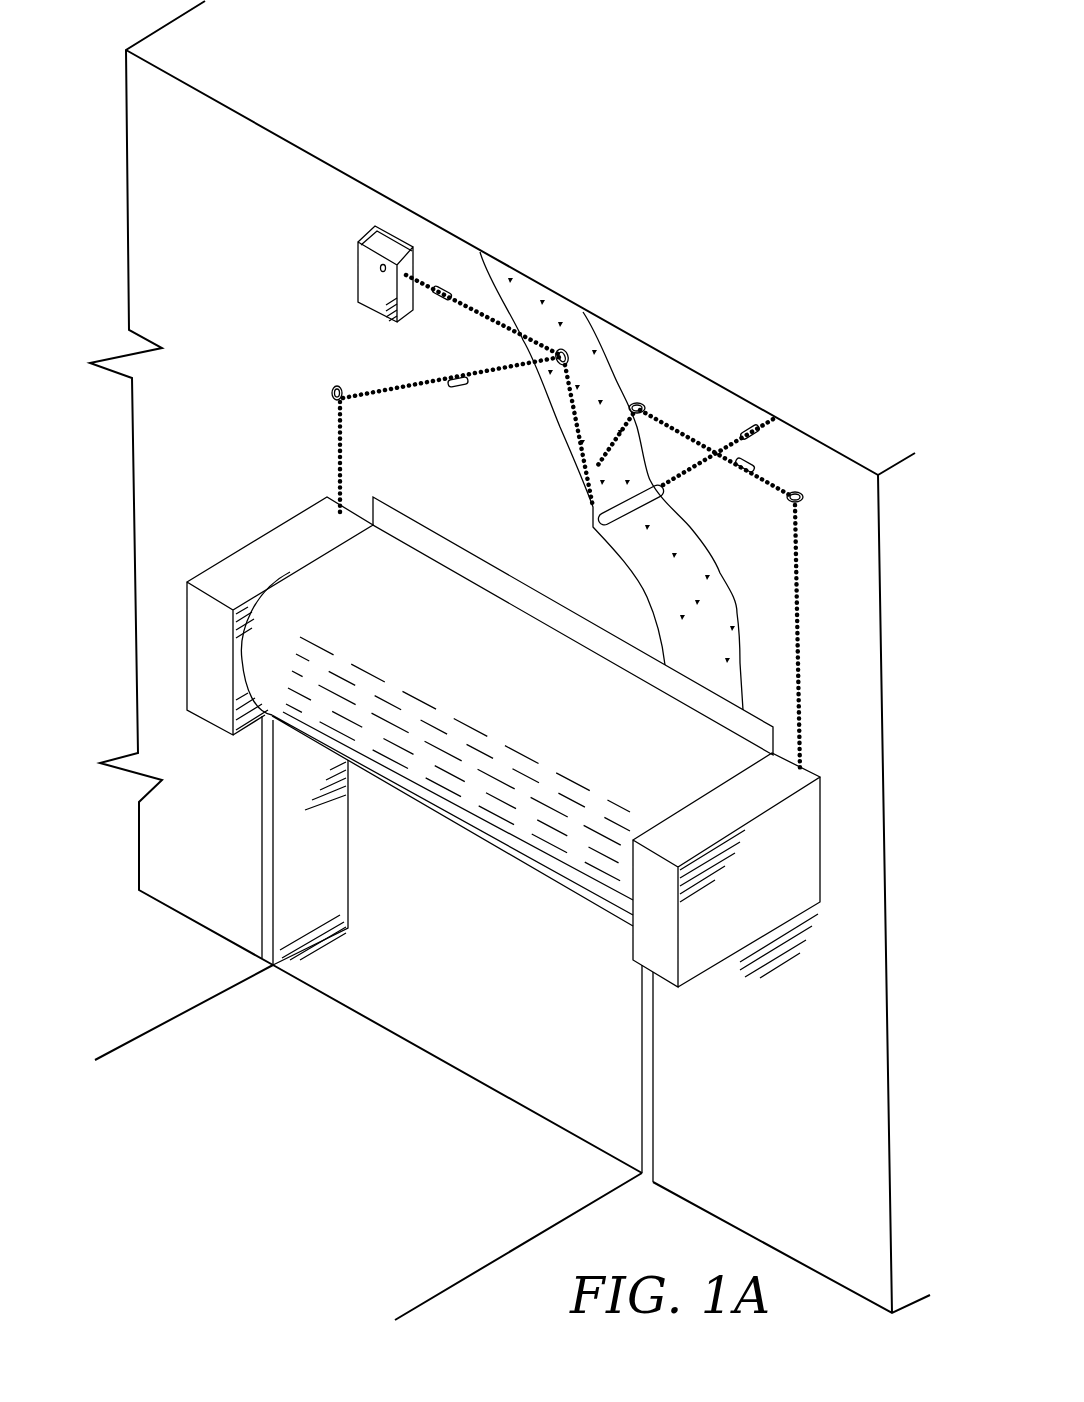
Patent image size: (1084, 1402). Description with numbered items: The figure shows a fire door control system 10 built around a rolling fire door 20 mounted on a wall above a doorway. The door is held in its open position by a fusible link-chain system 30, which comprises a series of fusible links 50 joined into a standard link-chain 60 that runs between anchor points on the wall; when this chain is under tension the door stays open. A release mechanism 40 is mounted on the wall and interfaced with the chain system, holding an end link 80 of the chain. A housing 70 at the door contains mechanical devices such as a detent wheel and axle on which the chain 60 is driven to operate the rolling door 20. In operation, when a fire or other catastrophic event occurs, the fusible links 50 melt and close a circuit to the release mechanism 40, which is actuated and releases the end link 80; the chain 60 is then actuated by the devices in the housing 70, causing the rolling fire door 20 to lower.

The fire door control system 10 is at (752, 272).
The rolling fire door 20 is at (527, 853).
The fusible link-chain system 30 is at (847, 632).
The release mechanism 40 is at (358, 293).
The fusible links 50 is at (443, 292).
The link-chain 60 is at (330, 410).
The housing 70 is at (740, 947).
The end link 80 is at (415, 272).